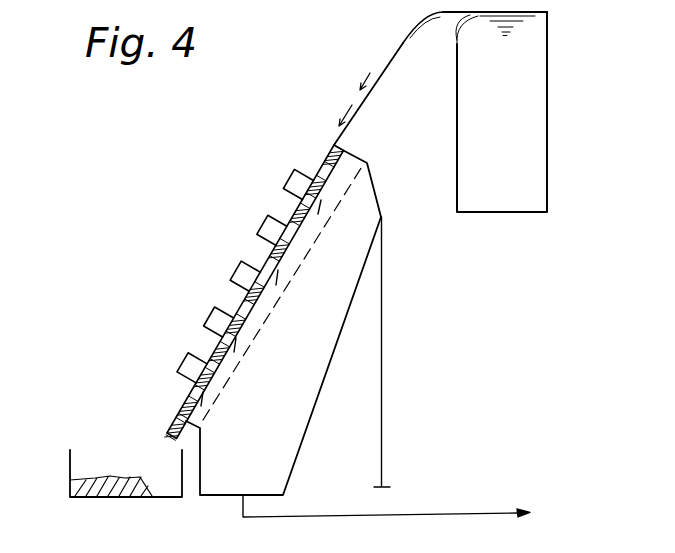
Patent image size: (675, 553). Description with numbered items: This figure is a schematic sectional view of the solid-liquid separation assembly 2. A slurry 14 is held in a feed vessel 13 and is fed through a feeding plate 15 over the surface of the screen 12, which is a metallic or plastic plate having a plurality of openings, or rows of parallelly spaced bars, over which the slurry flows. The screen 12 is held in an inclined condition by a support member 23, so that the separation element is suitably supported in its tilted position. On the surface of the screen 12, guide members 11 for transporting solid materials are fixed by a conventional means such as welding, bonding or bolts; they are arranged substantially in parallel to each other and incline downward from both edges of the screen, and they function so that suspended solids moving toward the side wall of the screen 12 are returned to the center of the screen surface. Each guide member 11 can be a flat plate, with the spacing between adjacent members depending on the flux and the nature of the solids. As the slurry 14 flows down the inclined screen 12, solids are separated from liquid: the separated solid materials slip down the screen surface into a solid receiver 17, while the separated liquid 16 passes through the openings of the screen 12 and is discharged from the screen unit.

The inclined body 2 is at (318, 208).
The guide member 11 is at (232, 280).
The screen 12 is at (186, 397).
The feed vessel 13 is at (547, 164).
The slurry 14 is at (372, 72).
The feeding plate 15 is at (374, 89).
The separated liquid 16 is at (420, 513).
The solid receiver 17 is at (70, 470).
The support member 23 is at (383, 342).